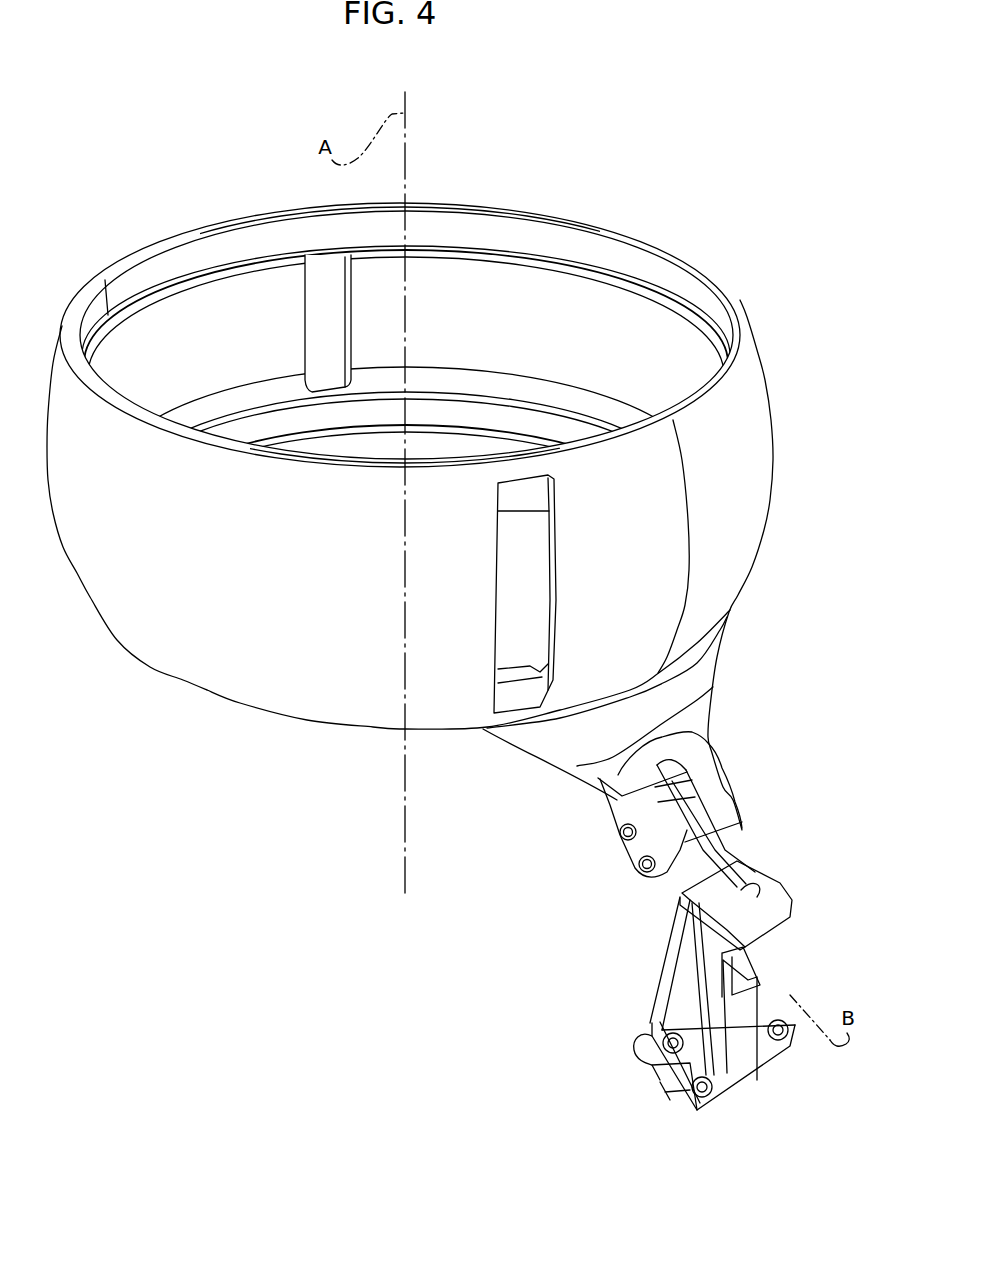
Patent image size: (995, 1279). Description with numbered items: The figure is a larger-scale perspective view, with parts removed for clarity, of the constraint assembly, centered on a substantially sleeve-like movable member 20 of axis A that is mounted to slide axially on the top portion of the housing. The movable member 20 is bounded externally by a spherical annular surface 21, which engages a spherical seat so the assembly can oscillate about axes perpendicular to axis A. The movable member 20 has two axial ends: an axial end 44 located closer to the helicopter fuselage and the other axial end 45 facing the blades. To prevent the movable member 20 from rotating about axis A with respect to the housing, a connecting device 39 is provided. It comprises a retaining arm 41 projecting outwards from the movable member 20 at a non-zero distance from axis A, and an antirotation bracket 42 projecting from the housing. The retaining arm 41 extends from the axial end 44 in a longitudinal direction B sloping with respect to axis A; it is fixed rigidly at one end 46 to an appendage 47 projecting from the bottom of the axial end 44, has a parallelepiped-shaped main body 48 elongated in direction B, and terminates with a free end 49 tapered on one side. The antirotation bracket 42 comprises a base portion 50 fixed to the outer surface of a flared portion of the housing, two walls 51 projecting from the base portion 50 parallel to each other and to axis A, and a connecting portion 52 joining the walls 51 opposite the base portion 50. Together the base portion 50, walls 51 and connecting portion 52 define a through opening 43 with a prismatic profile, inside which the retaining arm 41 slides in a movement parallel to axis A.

The movable member 20 is at (180, 684).
The spherical annular surface 21 is at (254, 690).
The connecting device 39 is at (683, 1034).
The retaining arm 41 is at (733, 851).
The antirotation bracket 42 is at (665, 1122).
The through opening 43 is at (757, 1078).
The axial end 44 is at (385, 720).
The other axial end 45 is at (628, 238).
The end 46 is at (638, 842).
The appendage 47 is at (598, 776).
The main body 48 is at (743, 873).
The free end 49 is at (757, 957).
The base portion 50 is at (690, 1063).
The walls 51 is at (727, 1010).
The connecting portion 52 is at (787, 902).